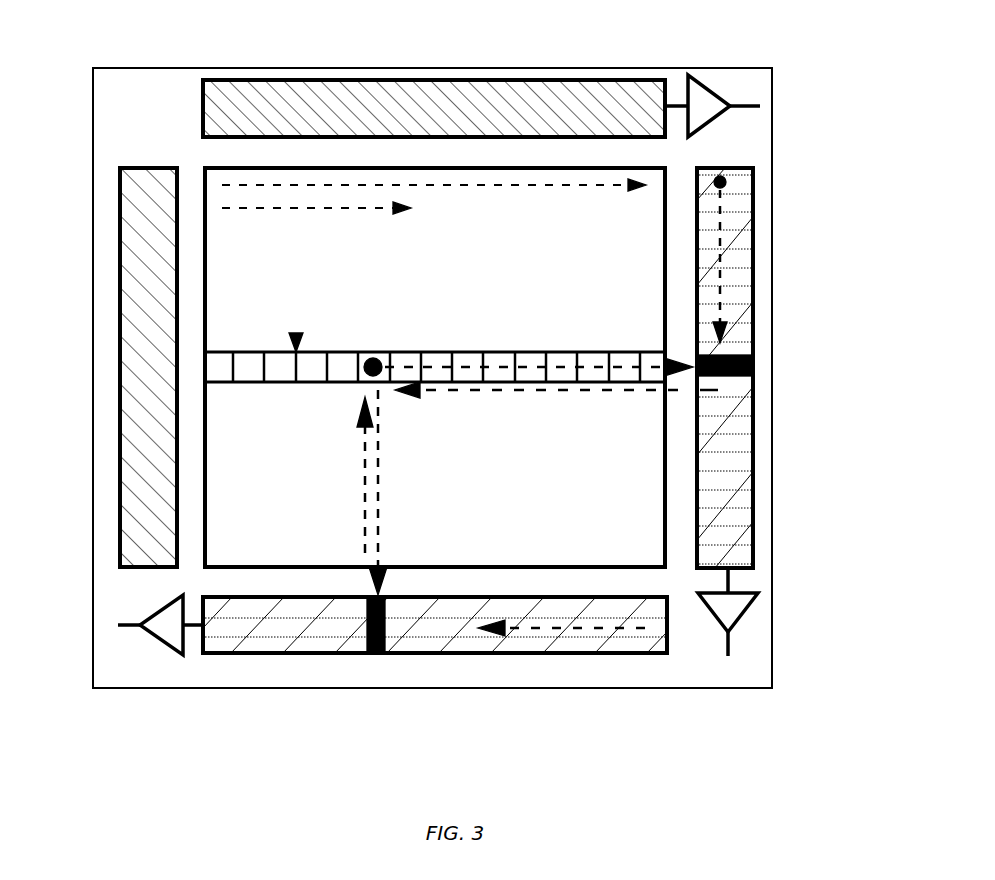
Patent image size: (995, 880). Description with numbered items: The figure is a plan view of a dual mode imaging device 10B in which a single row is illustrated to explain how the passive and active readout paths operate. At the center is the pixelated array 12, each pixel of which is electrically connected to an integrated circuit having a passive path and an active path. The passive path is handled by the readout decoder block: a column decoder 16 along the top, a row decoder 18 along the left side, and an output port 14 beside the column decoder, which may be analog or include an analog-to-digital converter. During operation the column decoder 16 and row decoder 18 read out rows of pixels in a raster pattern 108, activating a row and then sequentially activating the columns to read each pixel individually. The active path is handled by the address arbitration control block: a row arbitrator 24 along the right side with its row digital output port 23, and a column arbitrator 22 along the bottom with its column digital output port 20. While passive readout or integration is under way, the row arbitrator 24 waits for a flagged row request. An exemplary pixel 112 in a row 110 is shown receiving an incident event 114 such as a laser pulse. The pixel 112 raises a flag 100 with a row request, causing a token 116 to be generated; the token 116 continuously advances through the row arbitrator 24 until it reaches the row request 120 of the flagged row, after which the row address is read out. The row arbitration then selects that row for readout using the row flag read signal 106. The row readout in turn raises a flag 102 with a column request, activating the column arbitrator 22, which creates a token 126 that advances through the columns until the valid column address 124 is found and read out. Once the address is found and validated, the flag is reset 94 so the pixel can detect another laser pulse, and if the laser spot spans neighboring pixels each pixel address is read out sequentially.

The imaging device 10B is at (649, 722).
The pixelated array 12 is at (205, 167).
The output port 14 is at (716, 92).
The column decoder 16 is at (515, 78).
The row decoder 18 is at (150, 172).
The column digital output port 20 is at (163, 640).
The column arbitrator 22 is at (667, 645).
The row digital output port 23 is at (738, 614).
The row arbitrator 24 is at (700, 562).
The flag reset 94 is at (362, 468).
The row request flag 100 is at (500, 365).
The column request flag 102 is at (380, 450).
The row flag read signal 106 is at (455, 393).
The raster pattern 108 is at (360, 210).
The row 110 is at (295, 338).
The pixel 112 is at (371, 358).
The incident event 114 is at (368, 380).
The token 116 is at (726, 184).
The row request 120 is at (753, 356).
The valid column address 124 is at (362, 601).
The token 126 is at (591, 626).